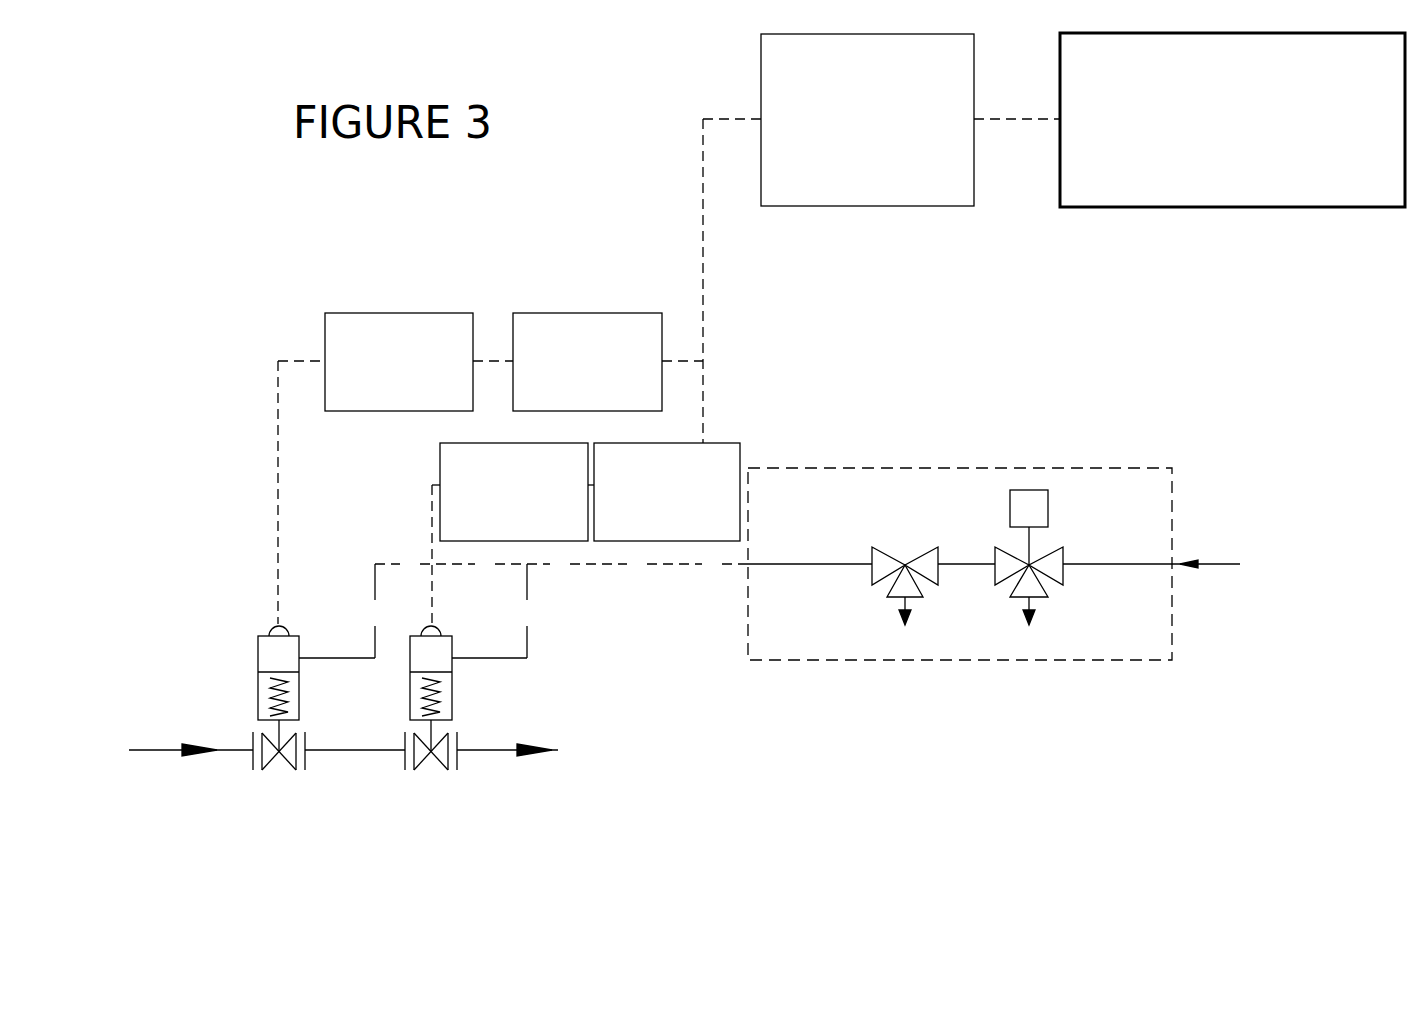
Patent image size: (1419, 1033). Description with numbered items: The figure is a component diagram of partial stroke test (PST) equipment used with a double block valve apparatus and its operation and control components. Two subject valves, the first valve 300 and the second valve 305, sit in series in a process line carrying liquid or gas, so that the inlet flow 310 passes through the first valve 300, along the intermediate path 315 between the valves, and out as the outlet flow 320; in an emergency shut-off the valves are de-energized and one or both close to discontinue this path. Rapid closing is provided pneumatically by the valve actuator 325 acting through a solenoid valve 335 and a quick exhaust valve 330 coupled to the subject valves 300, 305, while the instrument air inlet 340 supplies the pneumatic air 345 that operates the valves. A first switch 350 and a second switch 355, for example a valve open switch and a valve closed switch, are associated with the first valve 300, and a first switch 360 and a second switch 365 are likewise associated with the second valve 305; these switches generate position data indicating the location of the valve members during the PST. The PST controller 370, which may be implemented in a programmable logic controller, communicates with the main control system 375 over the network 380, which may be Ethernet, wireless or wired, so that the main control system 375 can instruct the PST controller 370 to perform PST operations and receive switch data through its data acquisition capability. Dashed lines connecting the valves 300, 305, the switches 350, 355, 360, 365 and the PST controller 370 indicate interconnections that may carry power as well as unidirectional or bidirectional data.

The first valve 300 is at (277, 772).
The second valve 305 is at (438, 772).
The inlet flow 310 is at (191, 772).
The intermediate path 315 is at (367, 757).
The outlet flow 320 is at (509, 772).
The valve actuator 325 is at (1098, 627).
The quick exhaust valve 330 is at (905, 580).
The solenoid valve 335 is at (1054, 569).
The instrument air inlet 340 is at (1023, 574).
The pneumatic air 345 is at (613, 575).
The first switch of the first valve 350 is at (399, 362).
The second switch of the first valve 355 is at (587, 362).
The first switch of the second valve 360 is at (514, 492).
The second switch of the second valve 365 is at (667, 492).
The PST controller 370 is at (867, 120).
The main control system 375 is at (1302, 195).
The network 380 is at (1021, 130).